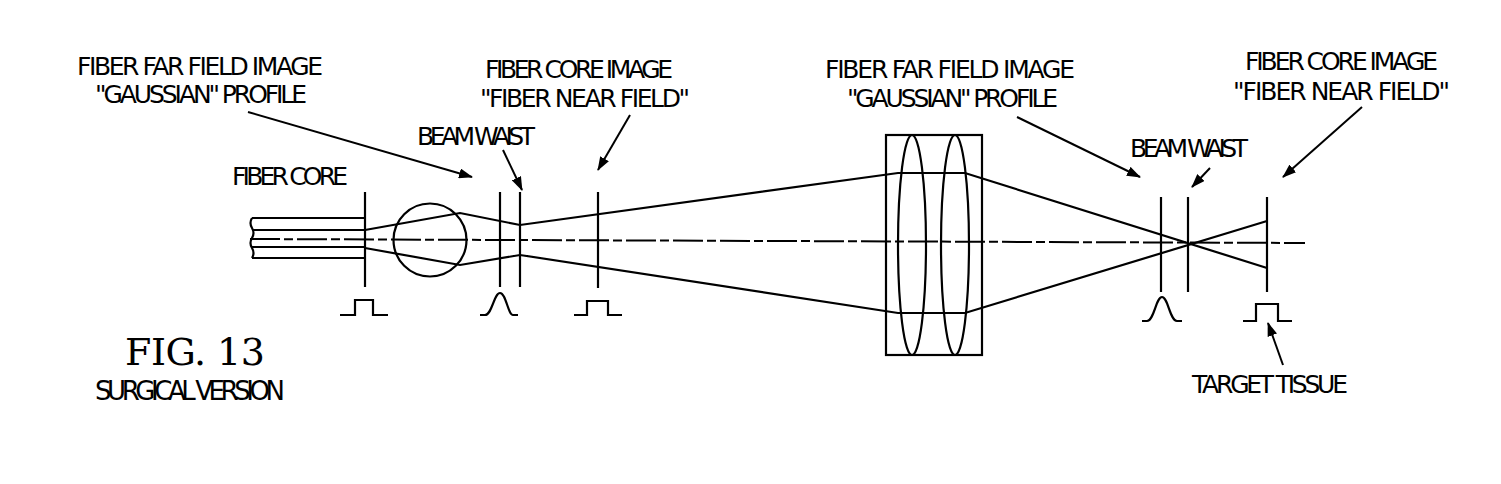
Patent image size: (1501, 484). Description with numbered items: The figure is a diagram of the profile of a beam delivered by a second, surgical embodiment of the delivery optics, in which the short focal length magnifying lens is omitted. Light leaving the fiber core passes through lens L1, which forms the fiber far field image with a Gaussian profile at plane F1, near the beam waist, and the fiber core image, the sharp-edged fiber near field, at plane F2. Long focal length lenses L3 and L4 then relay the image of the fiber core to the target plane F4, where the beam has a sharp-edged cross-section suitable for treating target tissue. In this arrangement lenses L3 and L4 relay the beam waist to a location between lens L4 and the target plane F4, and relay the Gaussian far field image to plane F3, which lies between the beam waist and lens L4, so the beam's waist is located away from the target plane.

The lens L1 is at (430, 225).
The focal plane F1 is at (495, 241).
The focal plane F2 is at (598, 241).
The long focal length lens L3 is at (906, 232).
The fourth lens L4 is at (959, 232).
The plane F3 is at (1162, 243).
The target plane F4 is at (1267, 243).